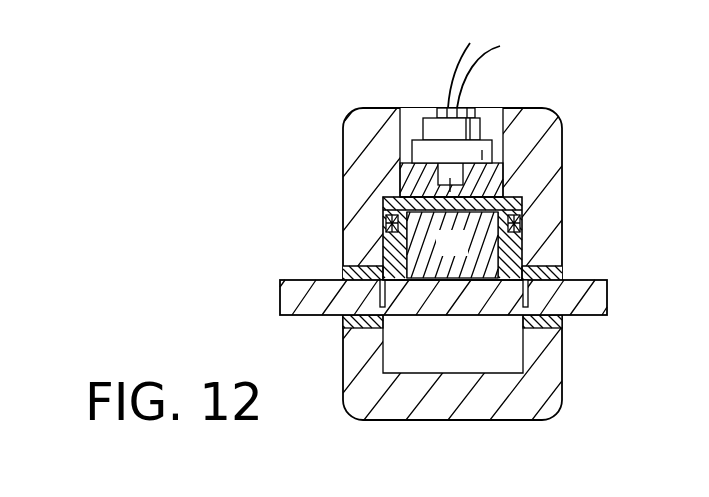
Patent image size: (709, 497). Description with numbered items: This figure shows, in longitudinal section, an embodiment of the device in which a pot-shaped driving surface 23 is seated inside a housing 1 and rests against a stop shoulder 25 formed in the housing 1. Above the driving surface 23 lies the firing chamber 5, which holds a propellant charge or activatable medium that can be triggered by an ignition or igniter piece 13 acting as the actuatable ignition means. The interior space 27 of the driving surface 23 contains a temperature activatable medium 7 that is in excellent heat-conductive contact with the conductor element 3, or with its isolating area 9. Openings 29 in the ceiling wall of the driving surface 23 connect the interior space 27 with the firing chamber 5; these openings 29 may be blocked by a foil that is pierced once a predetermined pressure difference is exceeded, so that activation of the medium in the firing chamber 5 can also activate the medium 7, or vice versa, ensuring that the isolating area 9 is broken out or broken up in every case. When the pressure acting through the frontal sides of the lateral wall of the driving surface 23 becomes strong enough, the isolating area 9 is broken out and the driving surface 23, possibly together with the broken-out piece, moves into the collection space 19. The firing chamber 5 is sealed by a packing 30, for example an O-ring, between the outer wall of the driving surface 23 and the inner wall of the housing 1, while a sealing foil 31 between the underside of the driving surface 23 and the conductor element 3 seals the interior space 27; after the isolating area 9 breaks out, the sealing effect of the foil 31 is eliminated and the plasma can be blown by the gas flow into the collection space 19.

The housing 1 is at (538, 128).
The conductor element 3 is at (592, 298).
The firing chamber 5 is at (405, 174).
The temperature activatable medium 7 is at (496, 178).
The isolating area 9 is at (383, 326).
The igniter piece 13 is at (467, 122).
The collection space 19 is at (464, 356).
The pot-shaped driving surface 23 is at (510, 265).
The stop shoulder 25 is at (527, 207).
The interior space 27 is at (467, 256).
The openings 29 is at (436, 193).
The packing 30 is at (513, 222).
The sealing foil 31 is at (473, 273).